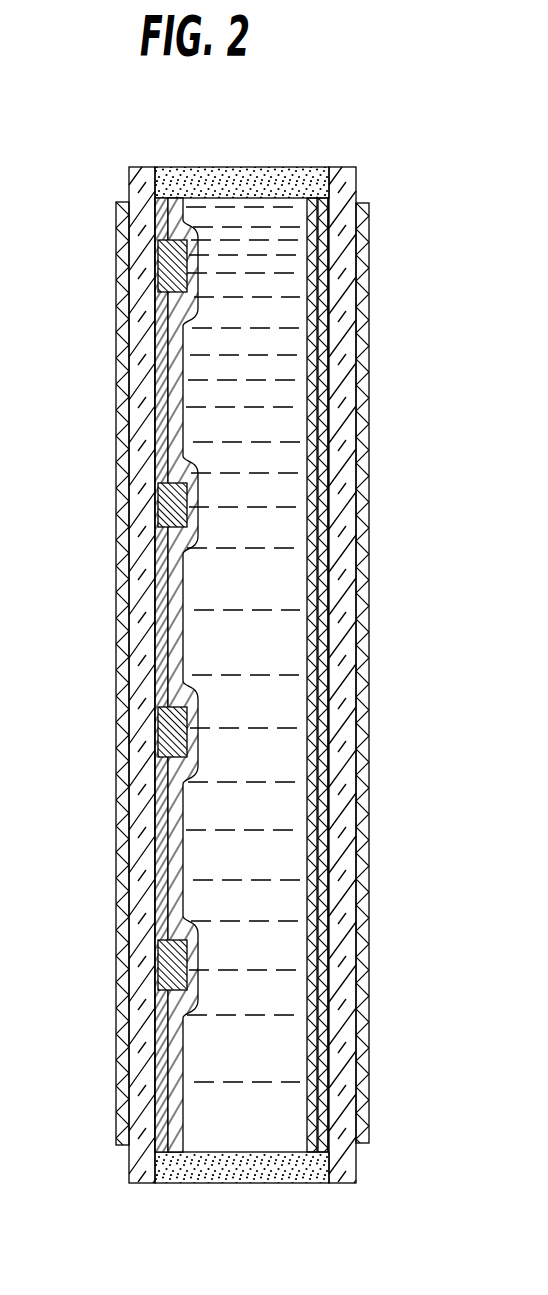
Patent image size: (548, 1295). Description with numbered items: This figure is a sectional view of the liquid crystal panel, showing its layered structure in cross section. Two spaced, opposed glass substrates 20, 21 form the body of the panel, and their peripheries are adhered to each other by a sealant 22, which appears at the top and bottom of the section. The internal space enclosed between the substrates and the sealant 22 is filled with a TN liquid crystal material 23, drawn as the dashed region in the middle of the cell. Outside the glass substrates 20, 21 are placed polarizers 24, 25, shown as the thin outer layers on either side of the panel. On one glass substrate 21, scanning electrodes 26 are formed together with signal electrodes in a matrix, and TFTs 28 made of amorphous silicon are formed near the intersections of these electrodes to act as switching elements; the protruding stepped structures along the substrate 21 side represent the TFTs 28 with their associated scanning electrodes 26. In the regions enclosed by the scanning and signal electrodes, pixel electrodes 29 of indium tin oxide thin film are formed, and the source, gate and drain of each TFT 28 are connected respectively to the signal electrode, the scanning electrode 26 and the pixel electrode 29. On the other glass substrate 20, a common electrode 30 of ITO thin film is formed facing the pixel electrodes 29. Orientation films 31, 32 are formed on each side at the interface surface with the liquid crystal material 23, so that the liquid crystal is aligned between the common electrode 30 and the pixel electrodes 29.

The glass substrate 20 is at (343, 177).
The glass substrate 21 is at (142, 168).
The sealant 22 is at (248, 167).
The TN liquid crystal material 23 is at (293, 495).
The polarizer 24 is at (363, 205).
The polarizer 25 is at (120, 202).
The scanning electrode 26 is at (170, 241).
The TFT 28 is at (167, 280).
The pixel electrode 29 is at (158, 350).
The common electrode 30 is at (325, 372).
The orientation film 31 is at (307, 200).
The orientation film 32 is at (162, 198).